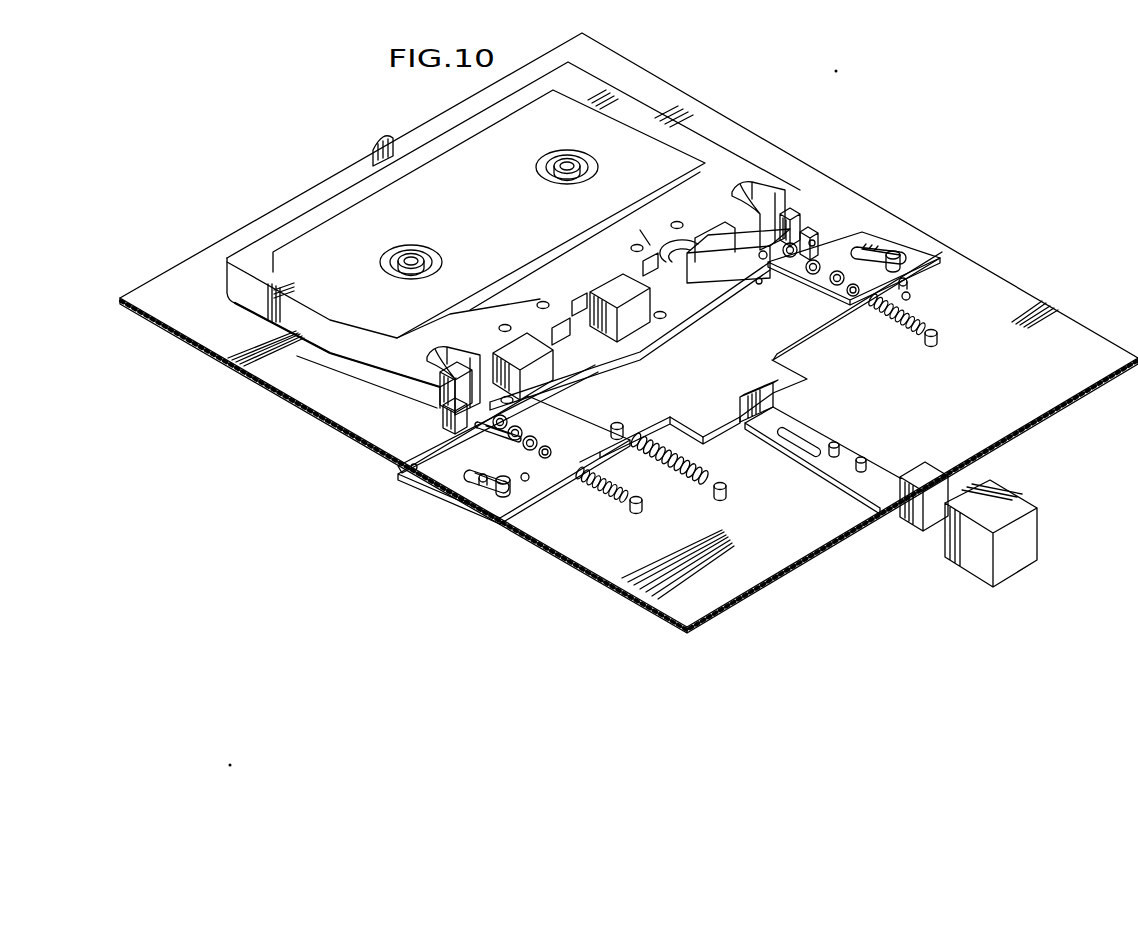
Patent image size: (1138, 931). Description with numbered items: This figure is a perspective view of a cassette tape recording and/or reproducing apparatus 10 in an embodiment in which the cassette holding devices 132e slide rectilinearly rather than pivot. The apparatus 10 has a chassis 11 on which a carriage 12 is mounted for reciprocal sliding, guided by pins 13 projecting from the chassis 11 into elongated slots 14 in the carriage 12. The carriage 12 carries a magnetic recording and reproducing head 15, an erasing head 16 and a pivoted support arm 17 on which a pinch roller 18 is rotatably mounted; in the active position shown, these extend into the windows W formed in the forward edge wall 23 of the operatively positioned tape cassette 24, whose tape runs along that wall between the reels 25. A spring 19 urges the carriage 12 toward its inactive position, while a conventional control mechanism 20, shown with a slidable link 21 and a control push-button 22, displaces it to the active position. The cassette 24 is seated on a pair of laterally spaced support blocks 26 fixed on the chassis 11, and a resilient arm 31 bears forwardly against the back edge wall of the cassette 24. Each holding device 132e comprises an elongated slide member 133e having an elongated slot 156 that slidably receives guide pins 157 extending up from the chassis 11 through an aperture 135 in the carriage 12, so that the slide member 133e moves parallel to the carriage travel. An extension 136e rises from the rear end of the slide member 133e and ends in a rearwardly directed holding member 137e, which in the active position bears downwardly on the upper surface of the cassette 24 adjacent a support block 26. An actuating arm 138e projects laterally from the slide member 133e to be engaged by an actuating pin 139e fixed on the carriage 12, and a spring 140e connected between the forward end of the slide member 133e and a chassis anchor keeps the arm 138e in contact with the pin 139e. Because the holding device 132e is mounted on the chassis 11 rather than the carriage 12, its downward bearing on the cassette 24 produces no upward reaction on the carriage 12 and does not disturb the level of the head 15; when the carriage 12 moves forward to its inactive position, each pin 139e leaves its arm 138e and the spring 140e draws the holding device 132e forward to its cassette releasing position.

The cassette tape recording and/or reproducing apparatus 10 is at (629, 325).
The chassis 11 is at (780, 574).
The carriage 12 is at (826, 325).
The pins 13 is at (922, 280).
The elongated slots 14 is at (903, 262).
The magnetic recording and reproducing head 15 is at (640, 328).
The erasing head 16 is at (542, 382).
The pivoted support arm 17 is at (716, 272).
The pinch roller 18 is at (700, 243).
The spring 19 is at (682, 462).
The control mechanism 20 is at (904, 514).
The link 21 is at (881, 473).
The control push-button 22 is at (1012, 511).
The forward edge wall 23 is at (672, 284).
The tape cassette 24 is at (622, 93).
The reels 25 is at (570, 167).
The support blocks 26 is at (818, 232).
The resilient arm 31 is at (391, 140).
The cassette holding devices 132e is at (815, 244).
The elongated slide member 133e is at (872, 240).
The aperture 135 is at (847, 293).
The extension 136e is at (800, 216).
The holding member 137e is at (748, 186).
The actuating arm 138e is at (908, 284).
The actuating pin 139e is at (910, 299).
The spring 140e is at (896, 322).
The elongated slot 156 is at (790, 258).
The guide pins 157 is at (834, 285).
The windows W is at (578, 308).